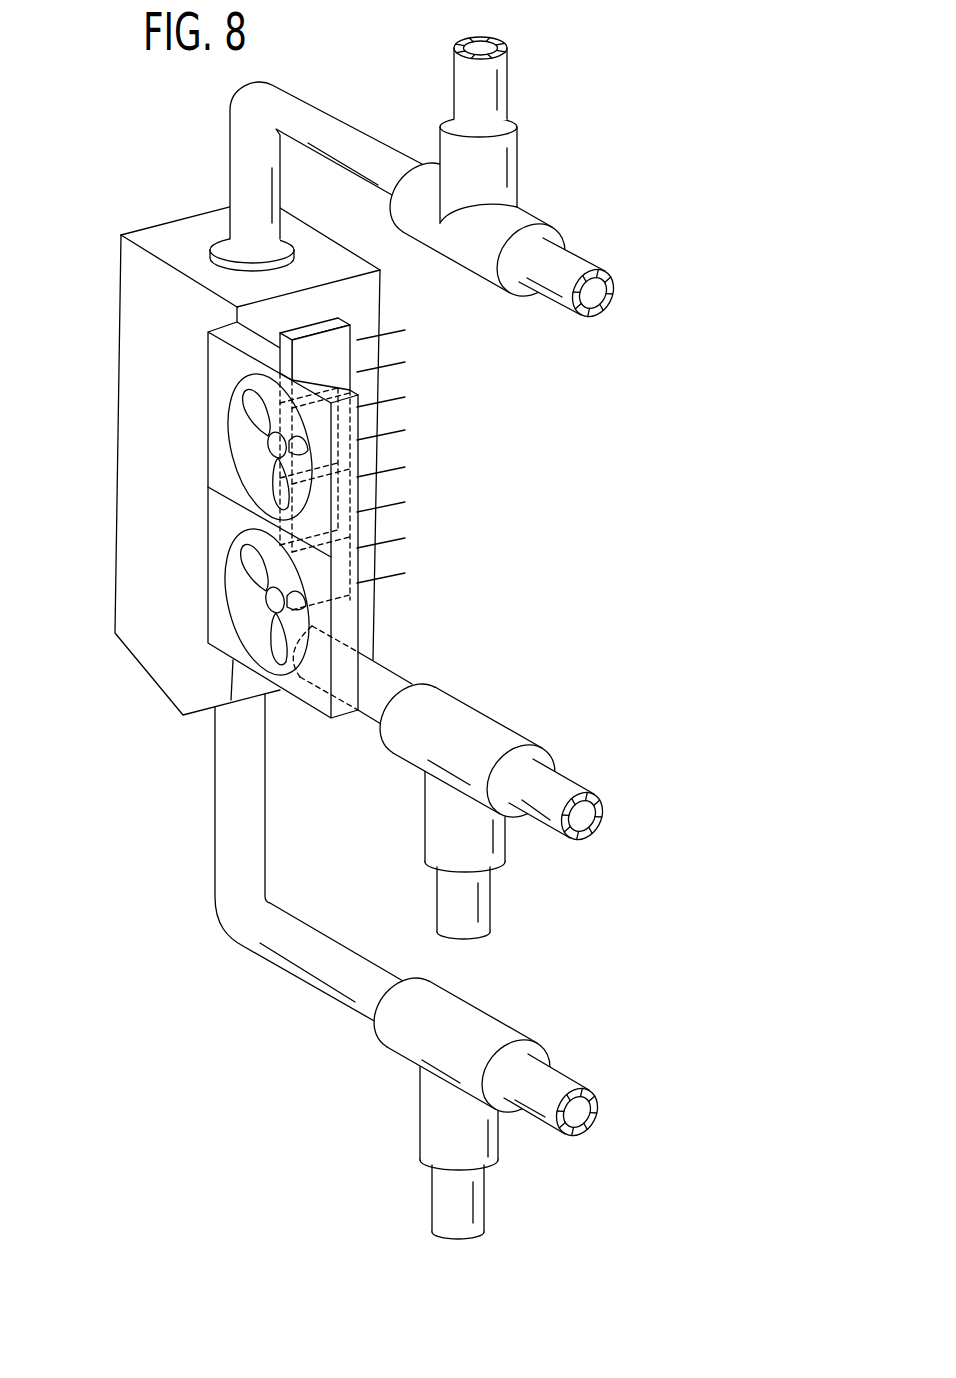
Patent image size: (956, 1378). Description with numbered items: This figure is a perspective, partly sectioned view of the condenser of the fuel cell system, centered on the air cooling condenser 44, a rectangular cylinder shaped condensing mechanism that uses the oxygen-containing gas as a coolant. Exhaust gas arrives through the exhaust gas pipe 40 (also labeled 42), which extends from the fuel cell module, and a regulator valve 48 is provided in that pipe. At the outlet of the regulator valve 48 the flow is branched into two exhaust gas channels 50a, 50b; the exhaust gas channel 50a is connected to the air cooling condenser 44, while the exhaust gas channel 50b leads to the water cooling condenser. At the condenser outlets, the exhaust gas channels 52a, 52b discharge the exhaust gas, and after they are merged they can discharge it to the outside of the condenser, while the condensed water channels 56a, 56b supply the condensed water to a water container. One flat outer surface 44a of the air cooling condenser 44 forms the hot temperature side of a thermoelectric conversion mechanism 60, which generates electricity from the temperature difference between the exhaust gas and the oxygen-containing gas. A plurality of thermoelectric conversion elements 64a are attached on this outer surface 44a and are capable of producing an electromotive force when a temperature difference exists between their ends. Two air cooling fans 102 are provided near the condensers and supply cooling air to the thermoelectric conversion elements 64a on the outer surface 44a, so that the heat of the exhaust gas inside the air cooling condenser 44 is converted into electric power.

The exhaust gas pipe 40 is at (533, 78).
The cooling water pipe (connector) 42 is at (497, 80).
The air cooling condenser 44 is at (126, 283).
The flat outer surface 44a is at (386, 290).
The regulator valve 48 is at (473, 223).
The exhaust gas channel 50a is at (345, 128).
The exhaust gas channel 50b is at (552, 283).
The exhaust gas channel 52a is at (358, 710).
The exhaust gas channel 52b is at (542, 827).
The condensed water channel 56a is at (283, 958).
The condensed water channel 56b is at (538, 1125).
The thermoelectric conversion mechanism 60 is at (251, 426).
The thermoelectric conversion elements 64a is at (323, 353).
The air cooling fan 102 is at (216, 460).